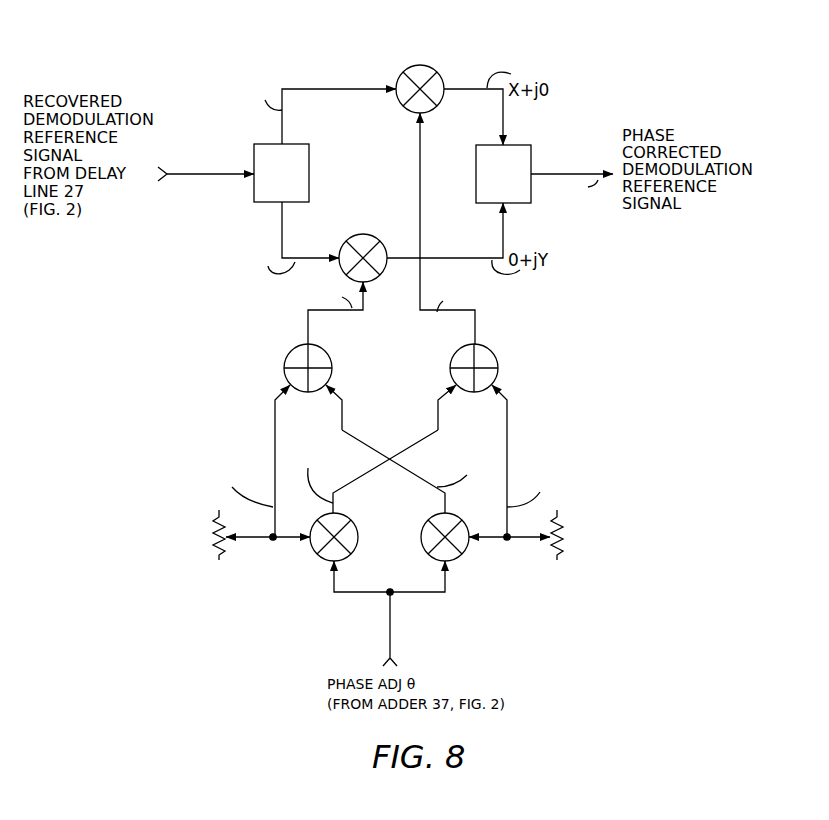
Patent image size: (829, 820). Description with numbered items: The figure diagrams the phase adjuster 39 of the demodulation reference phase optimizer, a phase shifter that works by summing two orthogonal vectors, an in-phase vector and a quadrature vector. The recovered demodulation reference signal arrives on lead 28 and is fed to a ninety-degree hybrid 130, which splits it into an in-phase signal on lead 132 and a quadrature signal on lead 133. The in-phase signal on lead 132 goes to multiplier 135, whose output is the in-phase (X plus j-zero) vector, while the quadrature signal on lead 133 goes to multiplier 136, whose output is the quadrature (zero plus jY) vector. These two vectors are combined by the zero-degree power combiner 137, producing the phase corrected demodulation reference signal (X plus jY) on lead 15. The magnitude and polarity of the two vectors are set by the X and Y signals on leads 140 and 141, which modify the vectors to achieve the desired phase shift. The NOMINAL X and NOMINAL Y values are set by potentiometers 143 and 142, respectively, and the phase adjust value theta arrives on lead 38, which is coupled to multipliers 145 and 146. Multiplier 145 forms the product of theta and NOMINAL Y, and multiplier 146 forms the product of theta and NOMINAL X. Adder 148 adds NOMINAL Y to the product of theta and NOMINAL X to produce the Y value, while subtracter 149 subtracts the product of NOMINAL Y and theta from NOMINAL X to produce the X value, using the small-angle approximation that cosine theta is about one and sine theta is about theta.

The lead 28 is at (193, 174).
The 90° hybrid 130 is at (297, 143).
The lead 132 is at (312, 88).
The lead 133 is at (282, 223).
The multiplier 135 is at (419, 62).
The multiplier 136 is at (358, 230).
The 0° power combiner 137 is at (523, 145).
The lead 15 is at (557, 172).
The lead 140 is at (427, 312).
The lead 141 is at (360, 312).
The adder 148 is at (290, 352).
The subtracter 149 is at (497, 355).
The multiplier 145 is at (357, 523).
The multiplier 146 is at (476, 513).
The potentiometer 142 is at (210, 539).
The potentiometer 143 is at (567, 543).
The lead 38 is at (390, 638).
The phase adjuster 39 is at (436, 453).